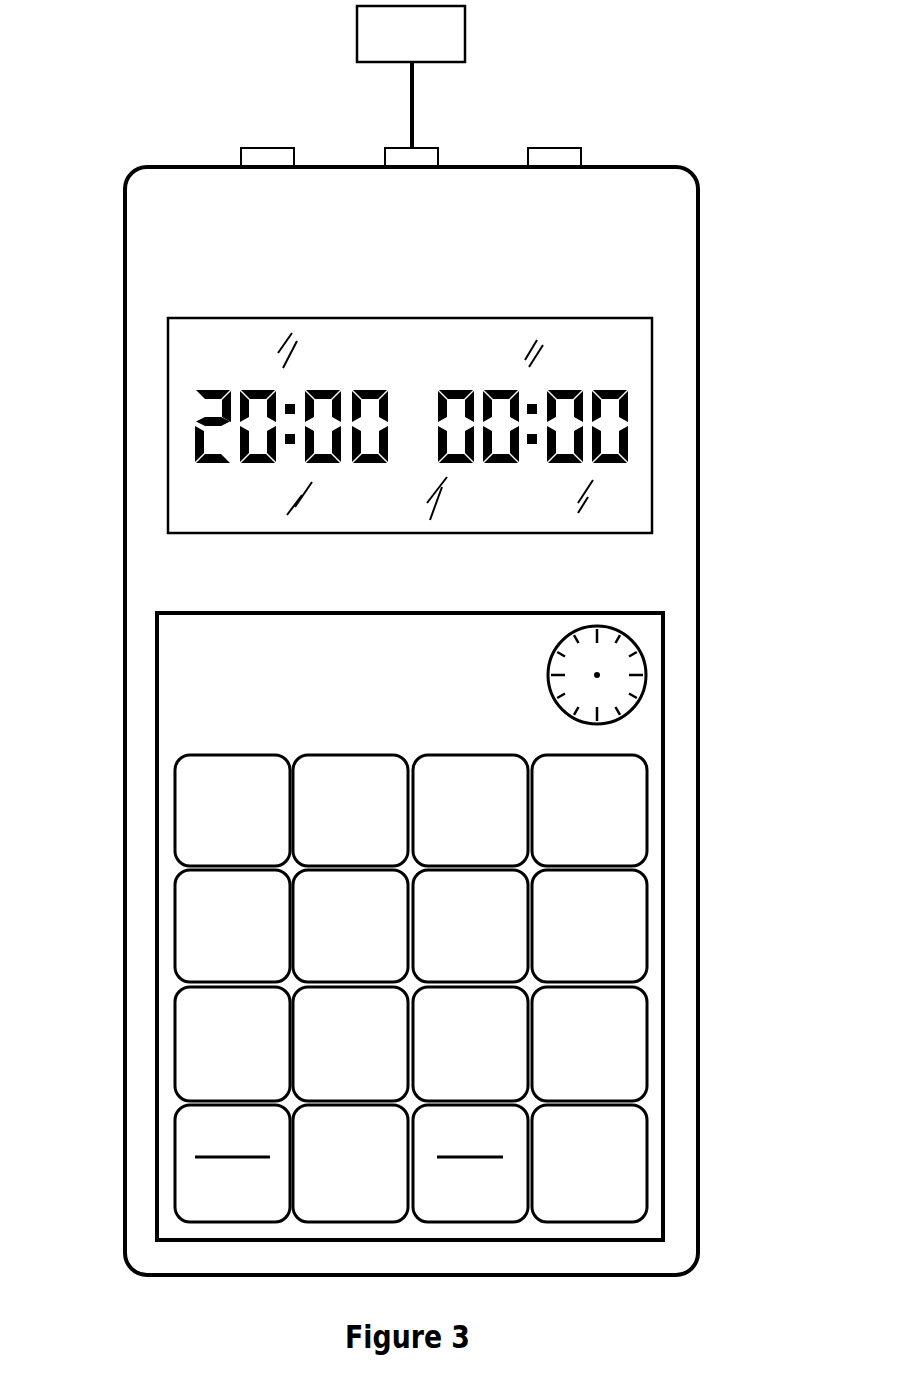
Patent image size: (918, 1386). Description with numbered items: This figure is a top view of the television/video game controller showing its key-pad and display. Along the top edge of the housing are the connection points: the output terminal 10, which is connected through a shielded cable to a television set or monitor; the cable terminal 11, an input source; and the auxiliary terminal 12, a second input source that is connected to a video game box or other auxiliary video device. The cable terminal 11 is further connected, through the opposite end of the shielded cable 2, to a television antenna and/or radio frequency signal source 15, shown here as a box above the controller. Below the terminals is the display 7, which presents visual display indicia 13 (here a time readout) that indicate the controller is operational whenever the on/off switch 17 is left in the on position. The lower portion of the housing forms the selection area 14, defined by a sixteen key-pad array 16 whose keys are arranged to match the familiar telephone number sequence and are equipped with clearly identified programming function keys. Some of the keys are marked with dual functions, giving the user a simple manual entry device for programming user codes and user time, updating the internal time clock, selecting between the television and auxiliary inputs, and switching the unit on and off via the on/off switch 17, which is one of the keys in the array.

The shielded cable 2 is at (412, 92).
The display 7 is at (630, 340).
The output terminal 10 is at (268, 148).
The cable terminal 11 is at (420, 148).
The auxiliary terminal 12 is at (560, 148).
The visual display indicia 13 is at (627, 407).
The selection area 14 is at (412, 926).
The television antenna and/or radio frequency signal source 15 is at (411, 34).
The sixteen key-pad array 16 is at (612, 957).
The on/off switch 17 is at (196, 1134).